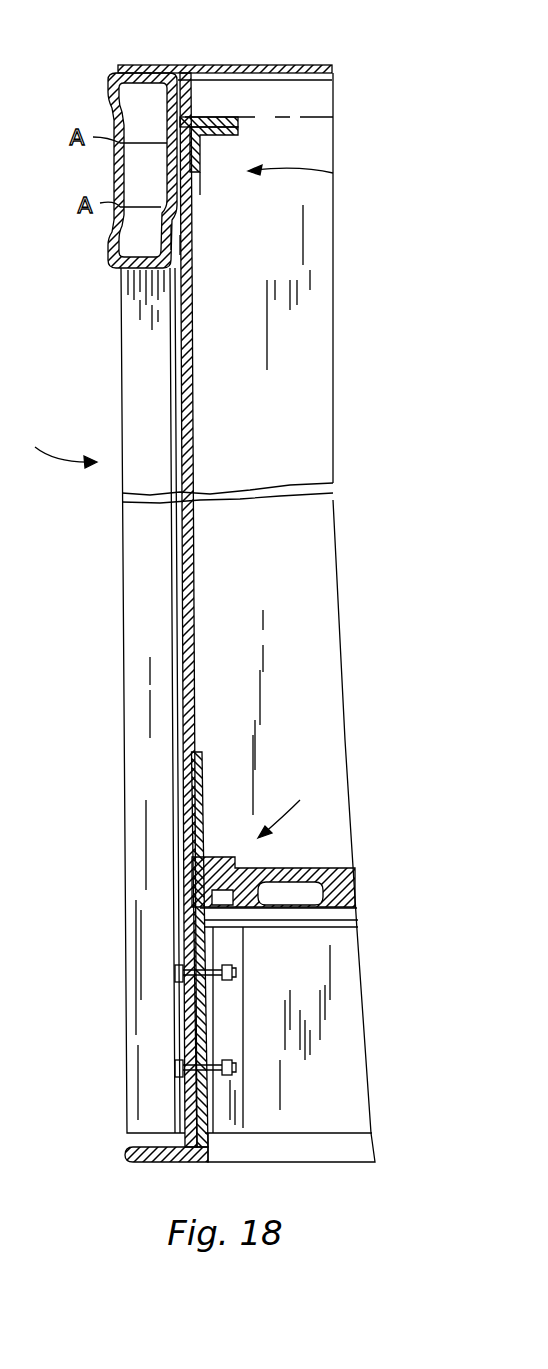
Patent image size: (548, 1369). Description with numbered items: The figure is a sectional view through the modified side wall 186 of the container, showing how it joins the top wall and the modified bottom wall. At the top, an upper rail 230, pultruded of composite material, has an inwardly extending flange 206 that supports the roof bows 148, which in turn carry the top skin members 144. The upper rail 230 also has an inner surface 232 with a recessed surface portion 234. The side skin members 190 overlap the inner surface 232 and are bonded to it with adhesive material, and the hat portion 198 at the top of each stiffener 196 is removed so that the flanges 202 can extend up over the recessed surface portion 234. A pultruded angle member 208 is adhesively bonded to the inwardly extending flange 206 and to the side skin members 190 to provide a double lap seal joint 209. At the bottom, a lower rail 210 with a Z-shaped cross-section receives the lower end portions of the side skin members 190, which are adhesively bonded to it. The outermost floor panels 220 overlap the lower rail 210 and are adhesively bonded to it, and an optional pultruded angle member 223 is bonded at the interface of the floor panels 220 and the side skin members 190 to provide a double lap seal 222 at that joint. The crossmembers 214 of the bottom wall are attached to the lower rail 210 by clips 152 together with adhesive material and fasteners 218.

The top skin member 144 is at (262, 64).
The roof bow 148 is at (323, 100).
The inwardly extending flange 206 is at (233, 128).
The pultruded angle member 208 is at (200, 140).
The double lap seal joint 209 is at (319, 173).
The inner surface 232 is at (190, 183).
The upper rail 230 is at (113, 167).
The flange 202 is at (173, 235).
The recessed surface portion 234 is at (193, 243).
The hat portion 198 is at (120, 290).
The stiffener 196 is at (132, 805).
The side skin member 190 is at (183, 400).
The modified side wall 186 is at (60, 439).
The pultruded angle member 223 is at (200, 775).
The double lap seal 222 is at (292, 805).
The floor panel 220 is at (300, 866).
The clip 152 is at (350, 1000).
The fastener 218 is at (235, 975).
The lower rail 210 is at (180, 1160).
The crossmember 214 is at (350, 1148).